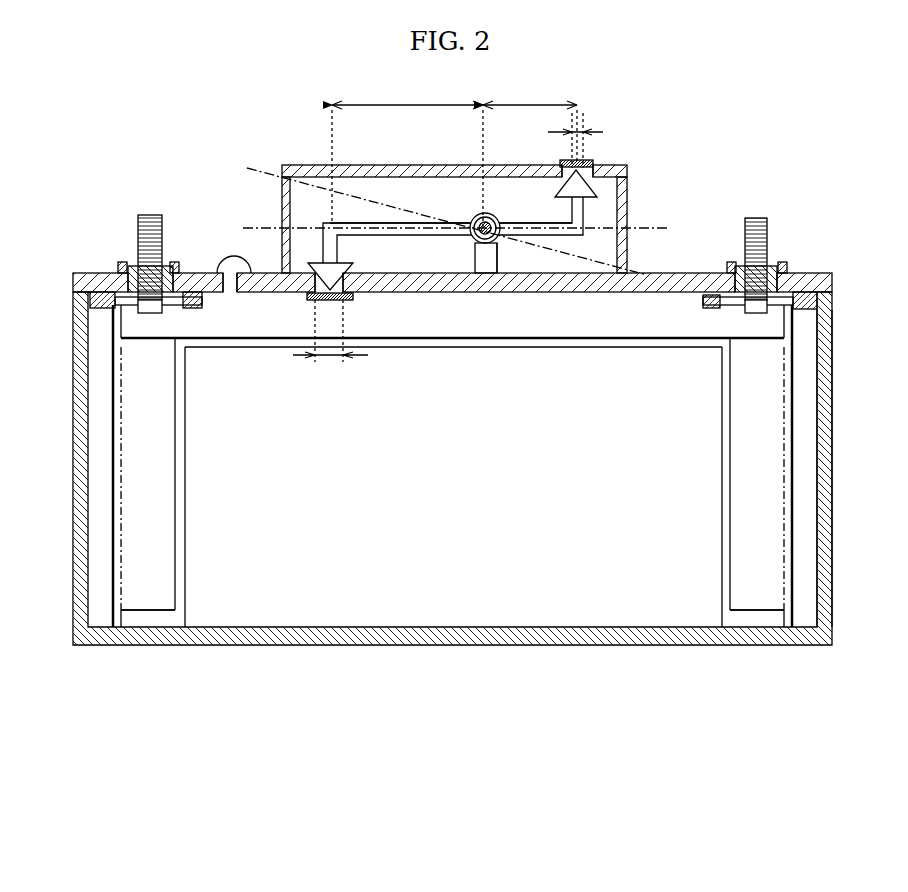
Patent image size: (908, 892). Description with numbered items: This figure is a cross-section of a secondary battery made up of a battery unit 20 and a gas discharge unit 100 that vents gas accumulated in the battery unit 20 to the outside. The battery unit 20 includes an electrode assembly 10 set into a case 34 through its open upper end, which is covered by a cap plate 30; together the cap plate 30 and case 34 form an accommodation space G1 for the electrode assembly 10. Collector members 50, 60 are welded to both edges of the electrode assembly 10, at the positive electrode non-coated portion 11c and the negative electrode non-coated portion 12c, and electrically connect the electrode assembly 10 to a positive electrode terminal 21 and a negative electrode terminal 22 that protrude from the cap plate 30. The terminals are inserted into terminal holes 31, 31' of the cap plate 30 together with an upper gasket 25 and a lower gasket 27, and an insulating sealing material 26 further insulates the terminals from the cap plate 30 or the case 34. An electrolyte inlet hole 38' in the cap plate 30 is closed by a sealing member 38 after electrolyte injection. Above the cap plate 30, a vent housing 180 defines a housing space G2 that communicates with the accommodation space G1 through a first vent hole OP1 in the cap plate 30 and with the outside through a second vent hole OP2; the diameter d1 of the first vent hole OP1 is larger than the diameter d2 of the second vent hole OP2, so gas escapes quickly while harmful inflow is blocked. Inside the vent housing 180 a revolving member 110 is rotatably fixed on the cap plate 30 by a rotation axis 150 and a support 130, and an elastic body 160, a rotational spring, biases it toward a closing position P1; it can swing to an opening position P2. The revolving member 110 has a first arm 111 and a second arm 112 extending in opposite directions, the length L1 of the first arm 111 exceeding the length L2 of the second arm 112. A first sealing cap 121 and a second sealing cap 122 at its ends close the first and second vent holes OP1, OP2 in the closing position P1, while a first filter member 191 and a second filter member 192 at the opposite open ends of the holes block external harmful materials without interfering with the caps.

The electrode assembly 10 is at (452, 409).
The positive electrode non-coated portion 11c is at (150, 630).
The negative electrode non-coated portion 12c is at (752, 622).
The battery unit 20 is at (130, 650).
The positive electrode terminal 21 is at (151, 215).
The negative electrode terminal 22 is at (755, 218).
The upper gasket 25 is at (120, 263).
The insulating sealing material 26 is at (92, 300).
The lower gasket 27 is at (73, 288).
The cap plate 30 is at (815, 278).
The gasket 31 is at (744, 244).
The terminal hole 31' is at (166, 254).
The case 34 is at (833, 358).
The sealing member 38 is at (246, 318).
The electrolyte inlet hole 38' is at (221, 326).
The collector member 50 is at (180, 470).
The collector member 60 is at (735, 495).
The gas discharge unit 100 is at (635, 170).
The revolving member 110 is at (480, 262).
The first arm 111 is at (380, 222).
The second arm 112 is at (517, 223).
The first sealing cap 121 is at (353, 268).
The second sealing cap 122 is at (598, 200).
The support 130 is at (497, 250).
The rotation axis 150 is at (467, 217).
The elastic body 160 is at (480, 215).
The vent housing 180 is at (628, 250).
The first filter member 191 is at (348, 301).
The second filter member 192 is at (595, 165).
The first vent hole OP1 is at (355, 293).
The second vent hole OP2 is at (562, 175).
The accommodation space G1 is at (690, 300).
The housing space G2 is at (610, 215).
The closing position P1 is at (444, 230).
The opening position P2 is at (433, 213).
The length of first arm L1 is at (407, 156).
The length of second arm L2 is at (530, 122).
The diameter of first vent hole d1 is at (330, 344).
The diameter of second vent hole d2 is at (577, 139).